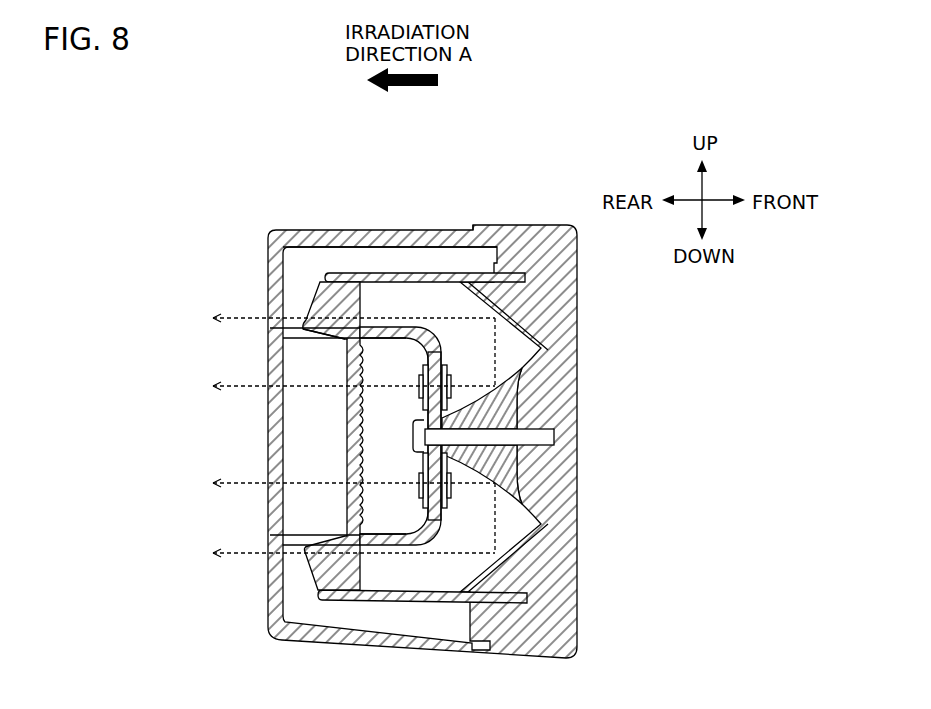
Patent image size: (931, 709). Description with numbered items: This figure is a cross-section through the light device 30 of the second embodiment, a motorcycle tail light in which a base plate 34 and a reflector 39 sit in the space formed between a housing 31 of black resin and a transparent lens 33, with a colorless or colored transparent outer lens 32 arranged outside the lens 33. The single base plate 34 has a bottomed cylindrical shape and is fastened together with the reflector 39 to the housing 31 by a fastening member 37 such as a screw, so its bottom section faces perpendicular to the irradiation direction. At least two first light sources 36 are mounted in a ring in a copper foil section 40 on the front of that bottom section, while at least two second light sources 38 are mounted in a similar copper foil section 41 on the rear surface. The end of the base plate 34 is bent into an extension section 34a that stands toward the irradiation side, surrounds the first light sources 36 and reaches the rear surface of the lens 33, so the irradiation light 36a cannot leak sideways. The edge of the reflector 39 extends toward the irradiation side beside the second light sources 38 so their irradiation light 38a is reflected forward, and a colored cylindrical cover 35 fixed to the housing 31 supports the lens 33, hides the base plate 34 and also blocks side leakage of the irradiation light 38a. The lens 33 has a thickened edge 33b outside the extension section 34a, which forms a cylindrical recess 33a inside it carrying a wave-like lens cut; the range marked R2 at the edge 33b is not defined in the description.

The light device 30 is at (174, 204).
The housing 31 is at (537, 238).
The outer lens 32 is at (316, 229).
The lens 33 is at (300, 578).
The recess 33a is at (305, 421).
The edge 33b is at (327, 305).
The base plate 34 is at (375, 318).
The extension section 34a is at (398, 327).
The cylindrical cover 35 is at (423, 273).
The first light sources 36 is at (422, 383).
The irradiation light 36a is at (245, 480).
The fastening member 37 is at (413, 440).
The second light sources 38 is at (451, 383).
The irradiation light 38a is at (247, 556).
The reflector 39 is at (480, 577).
The copper foil section 40 is at (423, 458).
The copper foil section 41 is at (517, 400).
The range R2 is at (262, 334).